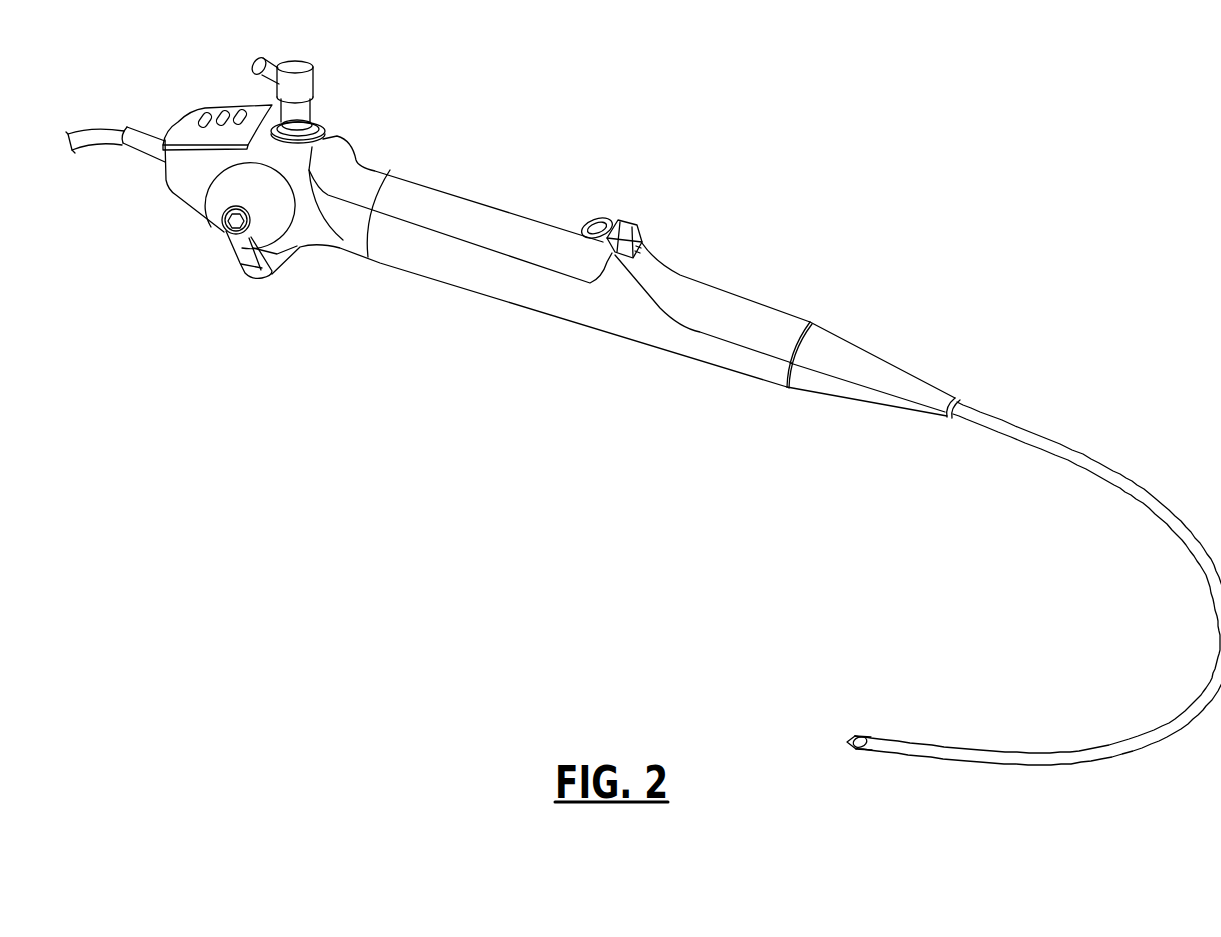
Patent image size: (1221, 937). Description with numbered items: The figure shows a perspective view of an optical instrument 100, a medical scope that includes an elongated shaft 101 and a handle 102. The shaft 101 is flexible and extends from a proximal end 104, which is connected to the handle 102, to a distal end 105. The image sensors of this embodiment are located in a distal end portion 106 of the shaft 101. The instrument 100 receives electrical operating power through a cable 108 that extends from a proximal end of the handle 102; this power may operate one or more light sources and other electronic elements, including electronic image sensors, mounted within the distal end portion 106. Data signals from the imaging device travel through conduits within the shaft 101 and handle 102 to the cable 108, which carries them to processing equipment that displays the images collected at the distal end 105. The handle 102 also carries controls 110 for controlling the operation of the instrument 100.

The optical instrument 100 is at (568, 168).
The elongated shaft 101 is at (1068, 446).
The handle 102 is at (452, 200).
The proximal end 104 is at (987, 376).
The distal end 105 is at (884, 718).
The distal end portion 106 is at (852, 736).
The cable 108 is at (92, 128).
The controls 110 is at (216, 95).